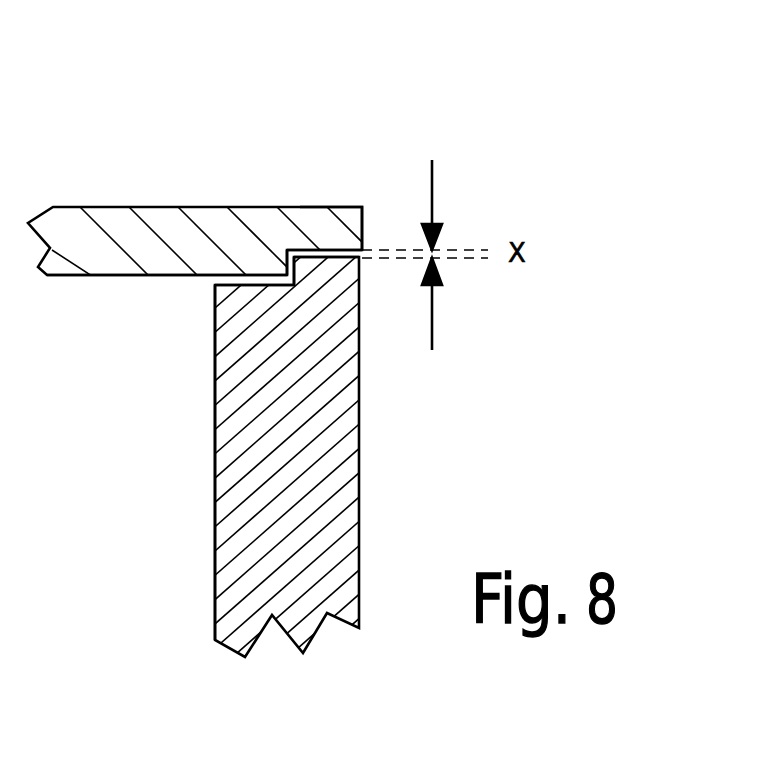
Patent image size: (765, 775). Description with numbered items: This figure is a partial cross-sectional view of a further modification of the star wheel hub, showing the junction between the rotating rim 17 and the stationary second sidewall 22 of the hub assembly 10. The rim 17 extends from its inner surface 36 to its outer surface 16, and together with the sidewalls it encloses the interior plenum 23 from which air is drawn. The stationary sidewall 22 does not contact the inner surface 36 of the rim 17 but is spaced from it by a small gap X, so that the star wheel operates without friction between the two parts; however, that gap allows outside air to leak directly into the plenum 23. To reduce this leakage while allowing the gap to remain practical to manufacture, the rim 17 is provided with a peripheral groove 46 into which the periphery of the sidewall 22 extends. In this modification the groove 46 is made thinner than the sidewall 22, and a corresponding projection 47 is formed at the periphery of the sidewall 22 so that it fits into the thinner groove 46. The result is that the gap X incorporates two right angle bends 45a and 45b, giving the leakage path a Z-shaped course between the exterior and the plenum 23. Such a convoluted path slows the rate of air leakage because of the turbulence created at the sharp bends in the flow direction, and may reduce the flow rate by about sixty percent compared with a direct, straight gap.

The panel assembly 10 is at (366, 145).
The outer surface 16 is at (165, 207).
The rim 17 is at (325, 228).
The second side wall 22 is at (360, 480).
The interior plenum 23 is at (156, 453).
The inner surface 36 is at (102, 275).
The right angle bend 45a is at (288, 263).
The right angle bend 45b is at (291, 278).
The peripheral groove 46 is at (343, 239).
The projection 47 is at (345, 272).